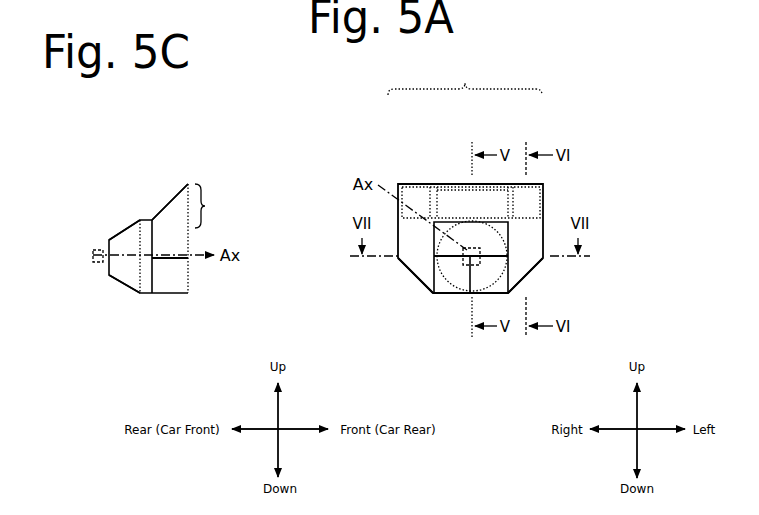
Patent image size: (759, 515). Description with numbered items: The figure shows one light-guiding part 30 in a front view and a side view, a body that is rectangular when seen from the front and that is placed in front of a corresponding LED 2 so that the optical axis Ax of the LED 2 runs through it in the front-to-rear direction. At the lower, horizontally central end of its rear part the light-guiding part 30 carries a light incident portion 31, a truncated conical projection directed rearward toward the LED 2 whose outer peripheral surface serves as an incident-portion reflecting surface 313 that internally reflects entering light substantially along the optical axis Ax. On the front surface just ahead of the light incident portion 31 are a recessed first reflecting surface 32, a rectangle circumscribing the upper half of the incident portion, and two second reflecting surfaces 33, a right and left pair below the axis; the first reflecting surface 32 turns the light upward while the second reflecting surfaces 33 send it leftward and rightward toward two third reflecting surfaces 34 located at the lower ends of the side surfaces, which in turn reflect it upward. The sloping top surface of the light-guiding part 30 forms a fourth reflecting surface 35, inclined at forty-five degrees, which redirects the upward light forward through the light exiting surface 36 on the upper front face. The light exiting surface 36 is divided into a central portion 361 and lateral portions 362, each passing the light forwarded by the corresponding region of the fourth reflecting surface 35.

In FIG. 5C, the LED 2 is at (93, 260).
In FIG. 5A, the LED 2 is at (483, 260).
In FIG. 5C, the light-guiding part 30 is at (186, 171).
In FIG. 5A, the light-guiding part 30 is at (596, 129).
In FIG. 5C, the light incident portion 31 is at (121, 290).
In FIG. 5A, the light incident portion 31 is at (422, 295).
In FIG. 5C, the incident-portion reflecting surface 313 is at (123, 238).
In FIG. 5A, the first reflecting surface 32 is at (487, 240).
In FIG. 5A, the second reflecting surfaces 33 is at (482, 278).
In FIG. 5C, the third reflecting surfaces 34 is at (168, 292).
In FIG. 5A, the third reflecting surfaces 34 is at (415, 275).
In FIG. 5C, the fourth reflecting surface 35 is at (167, 202).
In FIG. 5C, the light exiting surface 36 is at (210, 206).
In FIG. 5A, the light exiting surface 36 is at (465, 141).
In FIG. 5A, the central portion of the light exiting surface 361 is at (452, 185).
In FIG. 5A, the lateral portions of the light exiting surface 362 is at (425, 185).